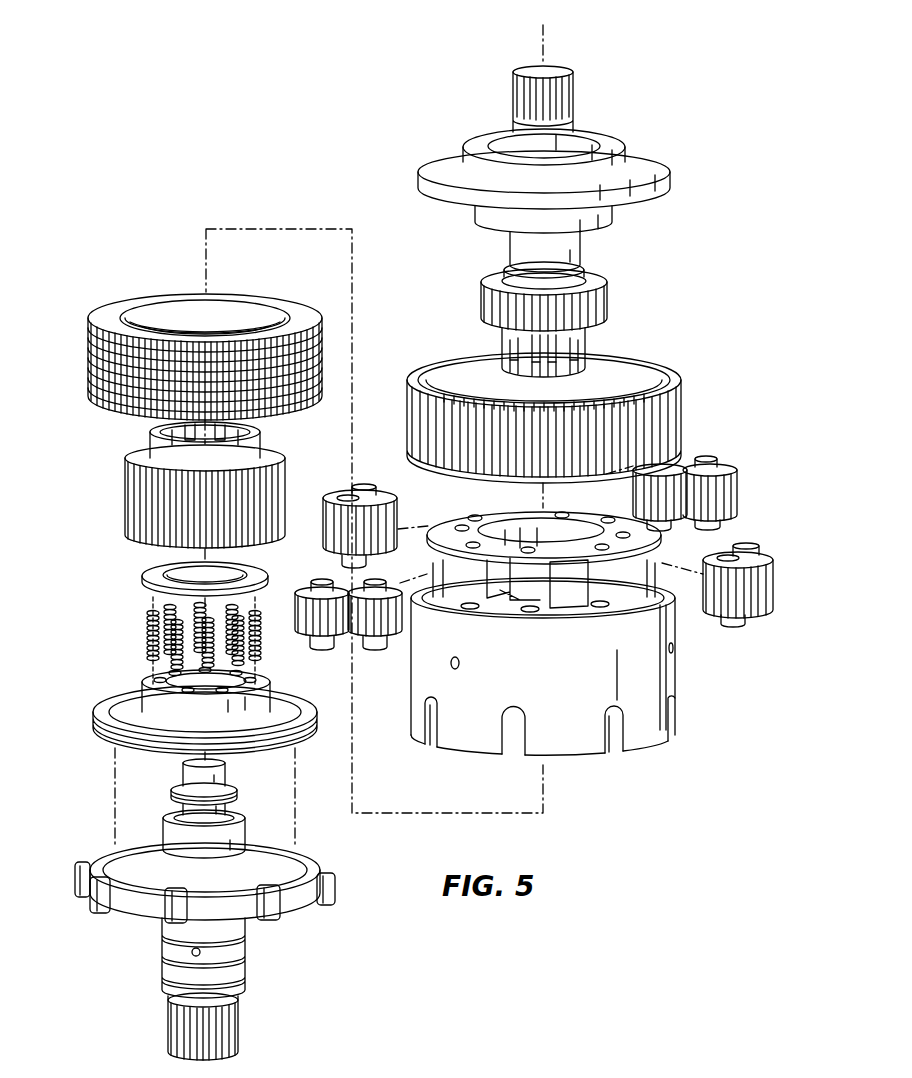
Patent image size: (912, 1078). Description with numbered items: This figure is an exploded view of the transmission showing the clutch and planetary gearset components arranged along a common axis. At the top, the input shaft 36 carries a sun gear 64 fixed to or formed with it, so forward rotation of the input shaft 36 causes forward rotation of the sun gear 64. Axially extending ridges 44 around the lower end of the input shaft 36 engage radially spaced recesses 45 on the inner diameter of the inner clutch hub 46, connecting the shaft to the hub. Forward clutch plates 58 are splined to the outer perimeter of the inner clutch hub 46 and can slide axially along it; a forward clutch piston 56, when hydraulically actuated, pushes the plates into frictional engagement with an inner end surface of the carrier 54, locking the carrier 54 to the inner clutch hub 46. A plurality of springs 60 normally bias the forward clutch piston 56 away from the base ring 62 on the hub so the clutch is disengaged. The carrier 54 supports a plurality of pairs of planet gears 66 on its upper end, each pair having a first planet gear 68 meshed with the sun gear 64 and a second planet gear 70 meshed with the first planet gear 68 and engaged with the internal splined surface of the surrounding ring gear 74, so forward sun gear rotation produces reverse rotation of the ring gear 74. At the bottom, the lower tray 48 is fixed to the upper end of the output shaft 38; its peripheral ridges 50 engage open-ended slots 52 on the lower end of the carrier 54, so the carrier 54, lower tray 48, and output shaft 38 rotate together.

The input shaft 36 is at (565, 99).
The output shaft 38 is at (238, 1032).
The axially extending ridges 44 is at (570, 347).
The recesses 45 is at (152, 432).
The inner clutch hub 46 is at (125, 453).
The lower tray 48 is at (140, 906).
The ridges 50 is at (92, 906).
The open-ended slots 52 is at (622, 748).
The carrier 54 is at (662, 688).
The forward clutch piston 56 is at (96, 714).
The forward clutch plates 58 is at (96, 343).
The springs 60 is at (147, 640).
The base ring 62 is at (148, 575).
The sun gear 64 is at (598, 292).
The pairs of planet gears 66 is at (379, 476).
The first planet gear 68 is at (768, 586).
The second planet gear 70 is at (712, 604).
The ring gear 74 is at (686, 360).